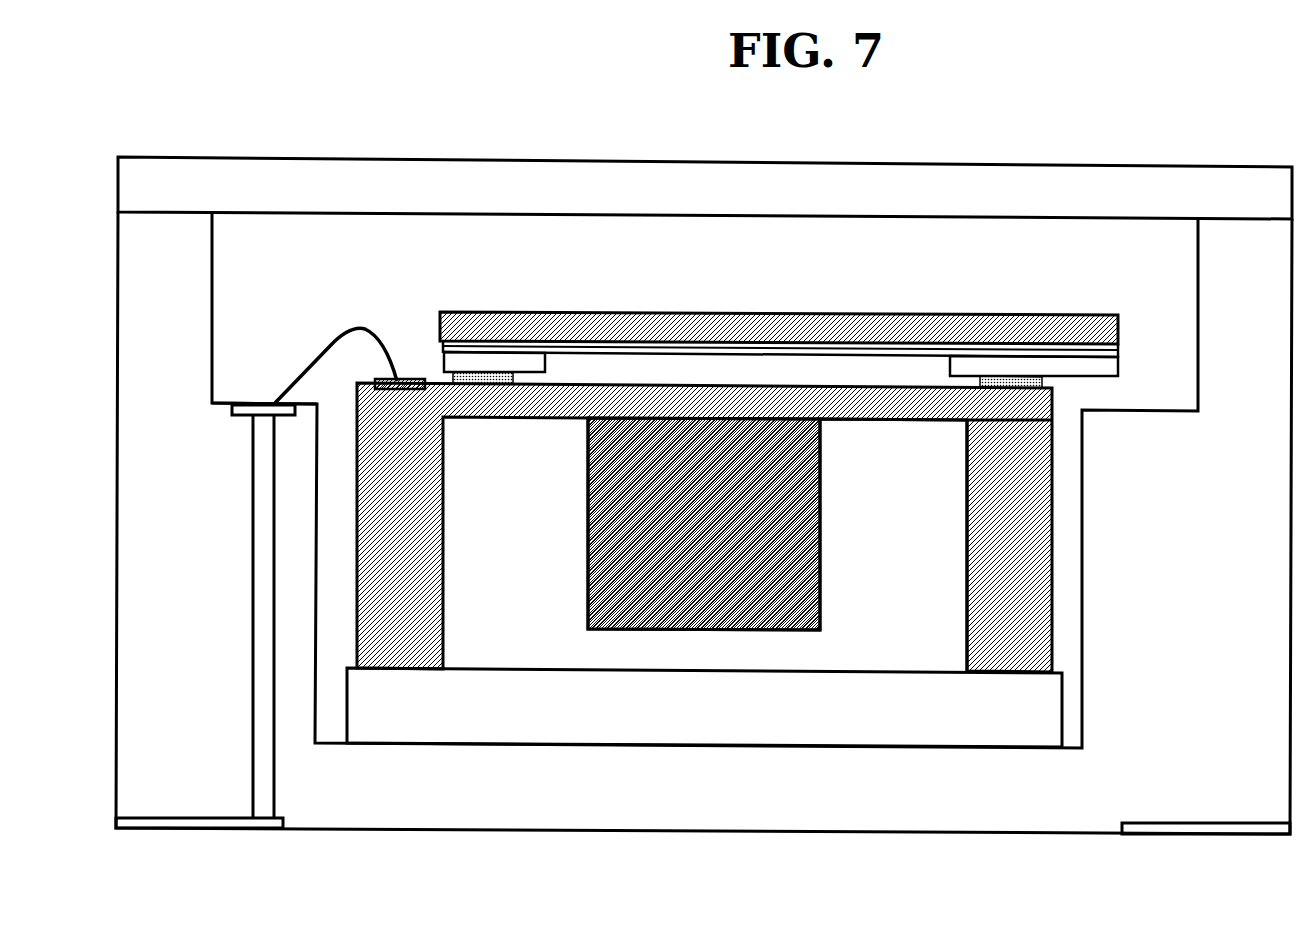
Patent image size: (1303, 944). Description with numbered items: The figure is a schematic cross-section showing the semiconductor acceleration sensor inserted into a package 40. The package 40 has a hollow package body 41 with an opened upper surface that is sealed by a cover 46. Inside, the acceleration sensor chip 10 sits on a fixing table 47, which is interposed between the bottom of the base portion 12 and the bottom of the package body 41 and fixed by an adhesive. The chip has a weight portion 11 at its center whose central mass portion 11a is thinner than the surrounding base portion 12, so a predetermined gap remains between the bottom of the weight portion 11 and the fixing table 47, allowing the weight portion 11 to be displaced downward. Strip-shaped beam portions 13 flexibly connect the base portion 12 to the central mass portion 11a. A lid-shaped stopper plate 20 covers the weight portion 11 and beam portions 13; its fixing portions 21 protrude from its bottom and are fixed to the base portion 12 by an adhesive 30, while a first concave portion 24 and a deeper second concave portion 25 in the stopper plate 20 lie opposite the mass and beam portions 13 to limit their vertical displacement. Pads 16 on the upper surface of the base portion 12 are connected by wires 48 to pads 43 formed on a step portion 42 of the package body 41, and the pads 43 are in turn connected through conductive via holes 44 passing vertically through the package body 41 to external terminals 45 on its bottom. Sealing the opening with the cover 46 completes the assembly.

The acceleration sensor chip 10 is at (704, 512).
The weight portion 11 is at (704, 491).
The central mass portion 11a is at (713, 440).
The base portion 12 is at (988, 509).
The beam portions 13 is at (913, 389).
The pads 16 is at (418, 381).
The stopper plate 20 is at (779, 313).
The fixing portions 21 is at (477, 360).
The first concave portion 24 is at (614, 350).
The second concave portion 25 is at (668, 348).
The adhesive 30 is at (477, 386).
The package 40 is at (704, 495).
The package body 41 is at (697, 810).
The step portion 42 is at (212, 408).
The pads 43 is at (262, 402).
The conductive via holes 44 is at (260, 620).
The external terminals 45 is at (240, 829).
The cover 46 is at (845, 182).
The fixing table 47 is at (882, 690).
The wires 48 is at (344, 328).